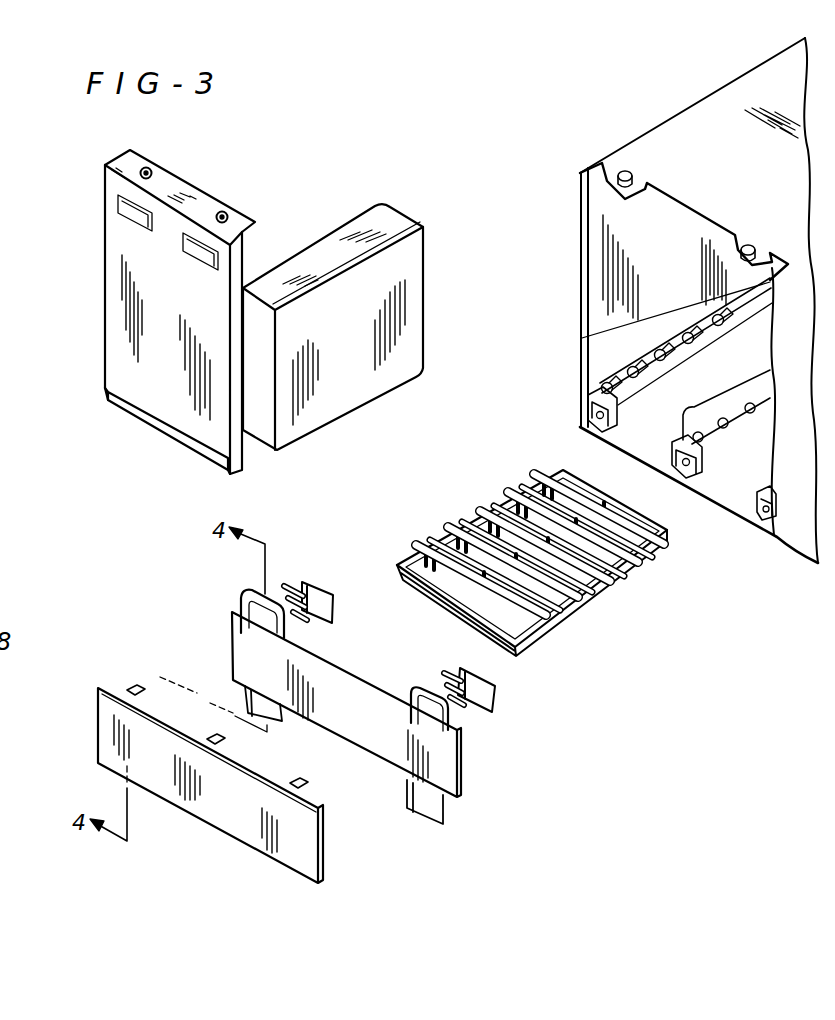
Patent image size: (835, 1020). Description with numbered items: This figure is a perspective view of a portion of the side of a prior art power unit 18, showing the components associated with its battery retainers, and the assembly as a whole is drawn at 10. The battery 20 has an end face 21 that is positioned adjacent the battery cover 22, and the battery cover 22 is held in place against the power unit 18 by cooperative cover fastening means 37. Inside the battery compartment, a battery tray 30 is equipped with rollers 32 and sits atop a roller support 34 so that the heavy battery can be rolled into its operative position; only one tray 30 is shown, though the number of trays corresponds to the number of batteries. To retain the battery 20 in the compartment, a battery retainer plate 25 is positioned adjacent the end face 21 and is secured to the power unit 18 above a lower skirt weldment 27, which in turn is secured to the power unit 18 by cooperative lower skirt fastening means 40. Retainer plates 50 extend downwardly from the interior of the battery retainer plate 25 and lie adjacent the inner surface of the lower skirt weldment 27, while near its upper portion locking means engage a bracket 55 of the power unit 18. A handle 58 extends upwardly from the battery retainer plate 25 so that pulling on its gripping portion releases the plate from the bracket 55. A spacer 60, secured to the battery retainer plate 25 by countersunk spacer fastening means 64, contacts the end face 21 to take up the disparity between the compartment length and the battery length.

The electronic module housing 10 is at (713, 82).
The power unit 18 is at (760, 189).
The battery 20 is at (343, 222).
The end face 21 is at (262, 412).
The battery cover 22 is at (118, 303).
The battery retainer plate 25 is at (464, 764).
The lower skirt weldment 27 is at (226, 817).
The battery tray 30 is at (612, 598).
The rollers 32 is at (573, 604).
The roller support 34 is at (592, 345).
The cover fastening means 37 is at (150, 171).
The lower skirt fastening means 40 is at (612, 425).
The retainer plates 50 is at (407, 783).
The bracket 55 is at (580, 372).
The handle 58 is at (410, 690).
The spacer 60 is at (494, 696).
The spacer fastening means 64 is at (478, 714).